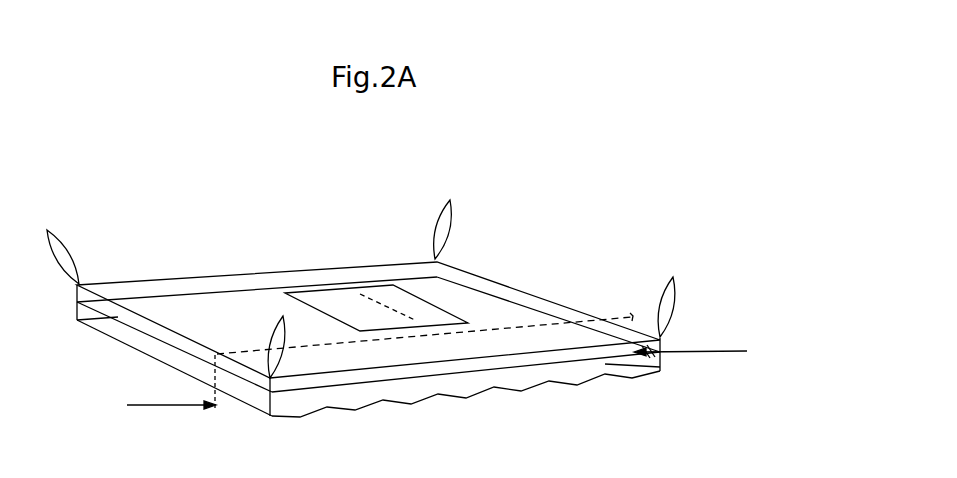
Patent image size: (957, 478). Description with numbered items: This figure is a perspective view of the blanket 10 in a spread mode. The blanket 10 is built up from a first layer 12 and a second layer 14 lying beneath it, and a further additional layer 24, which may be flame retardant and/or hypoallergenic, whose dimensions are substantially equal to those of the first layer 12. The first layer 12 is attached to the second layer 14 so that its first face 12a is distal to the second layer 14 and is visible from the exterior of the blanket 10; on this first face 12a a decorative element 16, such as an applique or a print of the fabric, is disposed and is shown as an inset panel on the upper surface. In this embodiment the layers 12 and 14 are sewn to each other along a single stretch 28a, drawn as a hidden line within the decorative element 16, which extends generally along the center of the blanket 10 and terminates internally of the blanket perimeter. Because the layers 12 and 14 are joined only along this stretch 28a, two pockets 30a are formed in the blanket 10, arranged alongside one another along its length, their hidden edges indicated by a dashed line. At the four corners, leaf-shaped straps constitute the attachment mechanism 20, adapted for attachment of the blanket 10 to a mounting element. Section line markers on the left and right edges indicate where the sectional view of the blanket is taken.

The blanket 10 is at (633, 242).
The first layer 12 is at (660, 337).
The first face 12a is at (268, 300).
The second layer 14 is at (660, 367).
The decorative element 16 is at (348, 304).
The attachment mechanism 20 is at (65, 248).
The additional layer 24 is at (500, 370).
The stretch 28a is at (377, 302).
The pocket 30a is at (260, 345).